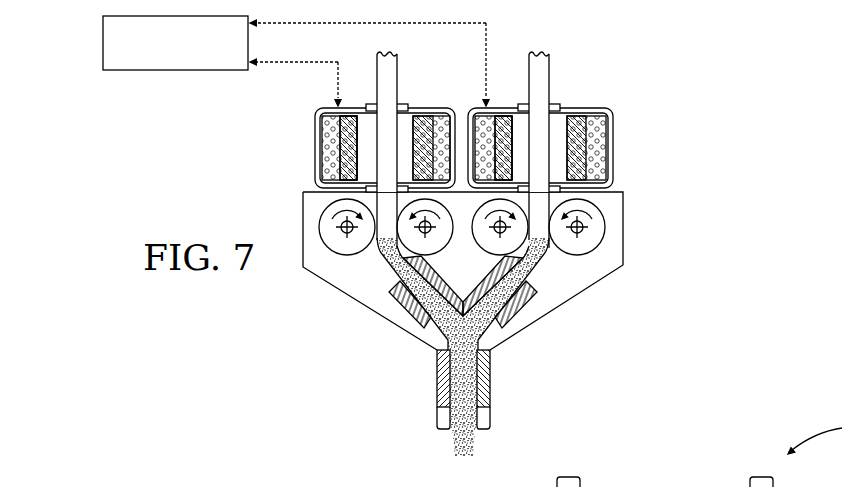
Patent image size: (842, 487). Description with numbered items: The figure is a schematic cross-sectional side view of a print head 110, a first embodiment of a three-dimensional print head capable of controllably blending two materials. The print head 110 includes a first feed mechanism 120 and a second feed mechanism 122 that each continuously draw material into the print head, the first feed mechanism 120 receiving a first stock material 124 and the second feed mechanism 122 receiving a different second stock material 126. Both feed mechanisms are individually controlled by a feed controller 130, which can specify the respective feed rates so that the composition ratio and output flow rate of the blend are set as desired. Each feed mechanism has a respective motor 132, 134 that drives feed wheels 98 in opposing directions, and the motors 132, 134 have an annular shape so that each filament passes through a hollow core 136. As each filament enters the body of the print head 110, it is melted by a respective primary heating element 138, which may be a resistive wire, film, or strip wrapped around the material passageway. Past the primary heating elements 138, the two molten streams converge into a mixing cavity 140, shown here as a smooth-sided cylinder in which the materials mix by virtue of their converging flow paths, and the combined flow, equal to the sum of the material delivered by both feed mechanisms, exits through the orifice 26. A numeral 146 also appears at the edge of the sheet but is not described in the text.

The feed controller 130 is at (103, 55).
The print head 110 is at (708, 26).
The second feed mechanism 122 is at (590, 80).
The motor 132 is at (315, 150).
The motor 134 is at (613, 140).
The hollow core 136 is at (410, 125).
The stock material 124 is at (398, 82).
The stock material 126 is at (550, 78).
The first feed mechanism 120 is at (366, 86).
The feed wheels 98 is at (319, 228).
The primary heating element 138 is at (410, 312).
The mixing cavity 140 is at (463, 380).
The orifice 26 is at (455, 428).
The tube 146 is at (634, 486).